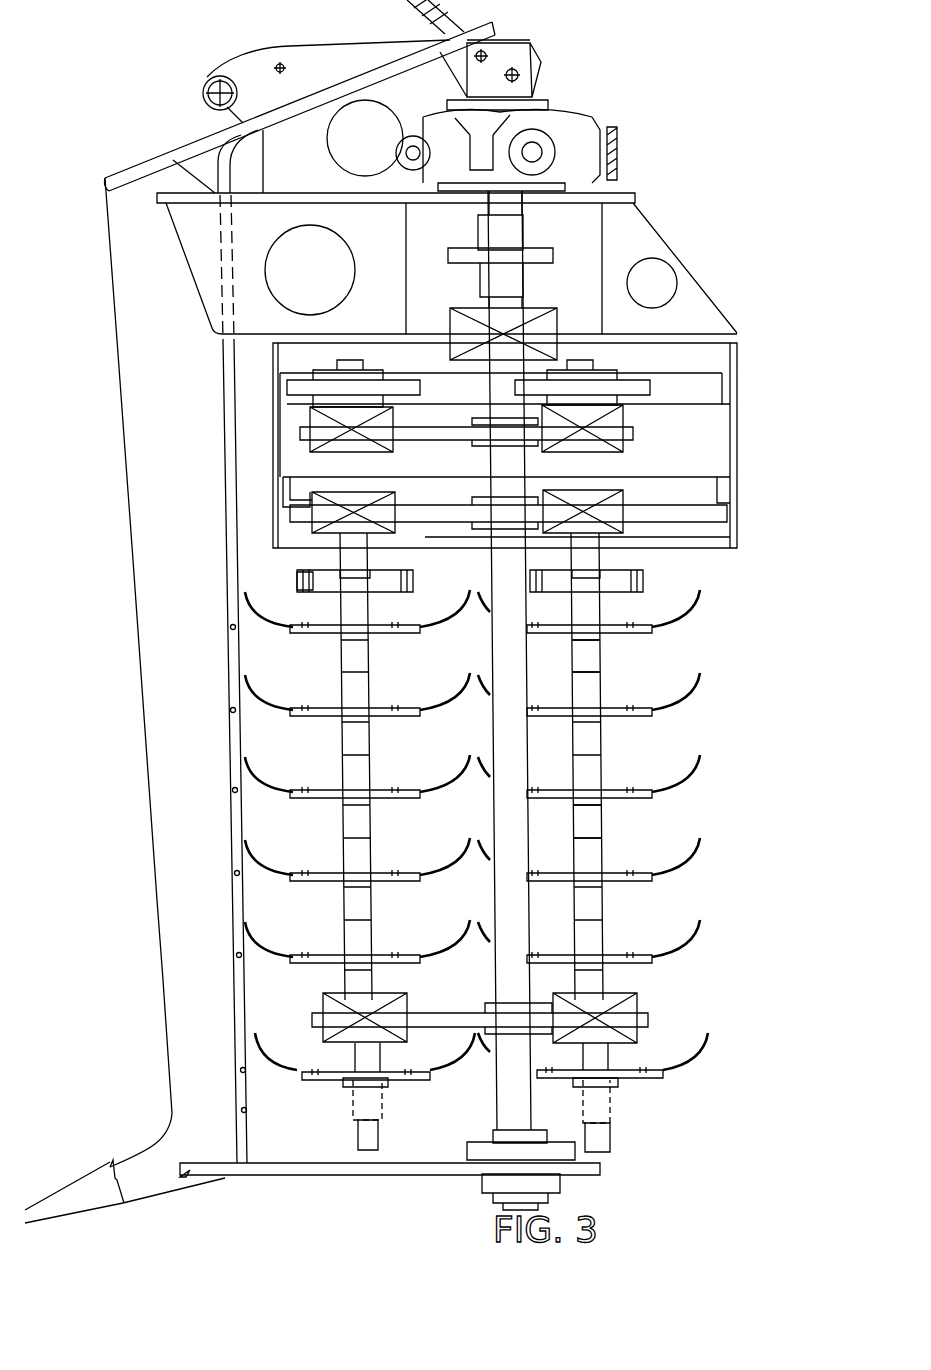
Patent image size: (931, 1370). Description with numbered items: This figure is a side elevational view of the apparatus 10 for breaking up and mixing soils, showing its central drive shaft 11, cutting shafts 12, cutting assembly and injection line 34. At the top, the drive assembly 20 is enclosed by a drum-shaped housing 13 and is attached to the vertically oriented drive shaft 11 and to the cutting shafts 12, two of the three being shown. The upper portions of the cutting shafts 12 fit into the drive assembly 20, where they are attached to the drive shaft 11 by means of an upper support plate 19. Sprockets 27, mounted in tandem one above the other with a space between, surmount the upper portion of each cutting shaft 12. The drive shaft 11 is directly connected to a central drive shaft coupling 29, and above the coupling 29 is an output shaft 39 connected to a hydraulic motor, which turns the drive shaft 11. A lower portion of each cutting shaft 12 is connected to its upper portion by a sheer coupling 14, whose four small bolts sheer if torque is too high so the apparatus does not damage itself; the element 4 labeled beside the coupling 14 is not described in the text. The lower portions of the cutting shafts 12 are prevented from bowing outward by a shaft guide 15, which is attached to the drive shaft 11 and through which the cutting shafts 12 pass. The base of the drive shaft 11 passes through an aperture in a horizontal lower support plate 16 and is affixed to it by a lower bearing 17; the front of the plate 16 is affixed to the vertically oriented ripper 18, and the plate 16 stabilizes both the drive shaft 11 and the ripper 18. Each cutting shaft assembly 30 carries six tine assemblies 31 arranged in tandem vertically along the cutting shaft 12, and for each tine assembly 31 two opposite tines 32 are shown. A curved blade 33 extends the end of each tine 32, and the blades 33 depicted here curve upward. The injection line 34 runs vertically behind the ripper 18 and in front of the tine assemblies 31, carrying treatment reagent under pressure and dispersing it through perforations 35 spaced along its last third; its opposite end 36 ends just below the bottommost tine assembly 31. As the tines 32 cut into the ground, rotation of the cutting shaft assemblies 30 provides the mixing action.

The bearing collar 4 is at (230, 591).
The apparatus 10 is at (759, 648).
The drive shaft 11 is at (512, 688).
The cutting shaft 12 is at (356, 907).
The drum-shaped housing 13 is at (735, 503).
The sheer coupling 14 is at (298, 573).
The shaft guide 15 is at (466, 1022).
The lower support plate 16 is at (600, 1165).
The lower bearing 17 is at (545, 1183).
The ripper 18 is at (205, 1005).
The upper support plate 19 is at (300, 432).
The drive assembly 20 is at (761, 446).
The sprocket 27 is at (288, 385).
The central drive shaft coupling 29 is at (532, 258).
The cutting shaft assembly 30 is at (756, 816).
The tine assembly 31 is at (250, 1057).
The tine 32 is at (603, 713).
The curved blade 33 is at (670, 712).
The injection line 34 is at (233, 633).
The perforations 35 is at (237, 871).
The opposite end of the injection line 36 is at (242, 1115).
The output shaft 39 is at (500, 236).